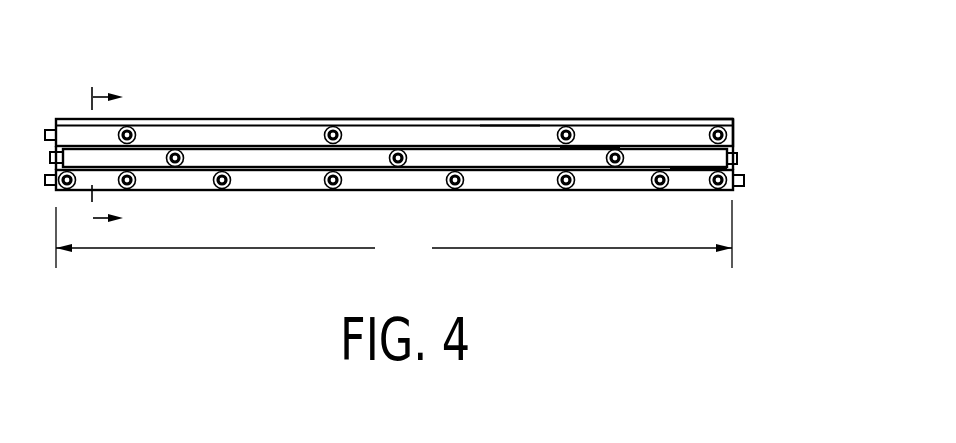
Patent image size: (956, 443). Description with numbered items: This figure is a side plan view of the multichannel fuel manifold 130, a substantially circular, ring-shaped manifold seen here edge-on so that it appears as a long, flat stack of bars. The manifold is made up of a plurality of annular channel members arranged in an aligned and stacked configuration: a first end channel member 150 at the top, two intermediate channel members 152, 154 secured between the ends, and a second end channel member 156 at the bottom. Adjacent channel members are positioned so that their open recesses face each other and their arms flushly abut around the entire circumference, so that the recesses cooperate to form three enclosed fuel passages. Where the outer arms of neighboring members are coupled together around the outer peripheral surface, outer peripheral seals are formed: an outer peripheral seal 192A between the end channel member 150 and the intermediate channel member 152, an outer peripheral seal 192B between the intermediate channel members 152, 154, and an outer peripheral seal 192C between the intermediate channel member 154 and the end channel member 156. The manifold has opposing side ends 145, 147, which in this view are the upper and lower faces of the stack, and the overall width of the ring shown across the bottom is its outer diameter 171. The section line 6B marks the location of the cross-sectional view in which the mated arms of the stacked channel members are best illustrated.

The multichannel fuel manifold 130 is at (436, 119).
The side end 145 is at (242, 118).
The side end 147 is at (243, 192).
The first end channel member 150 is at (733, 119).
The intermediate channel member 152 is at (734, 132).
The intermediate channel member 154 is at (738, 160).
The second end channel member 156 is at (744, 186).
The outer peripheral seal 192A is at (505, 126).
The outer peripheral seal 192B is at (590, 148).
The outer peripheral seal 192C is at (702, 168).
The outer diameter 171 is at (394, 234).
The section line 6B is at (93, 155).